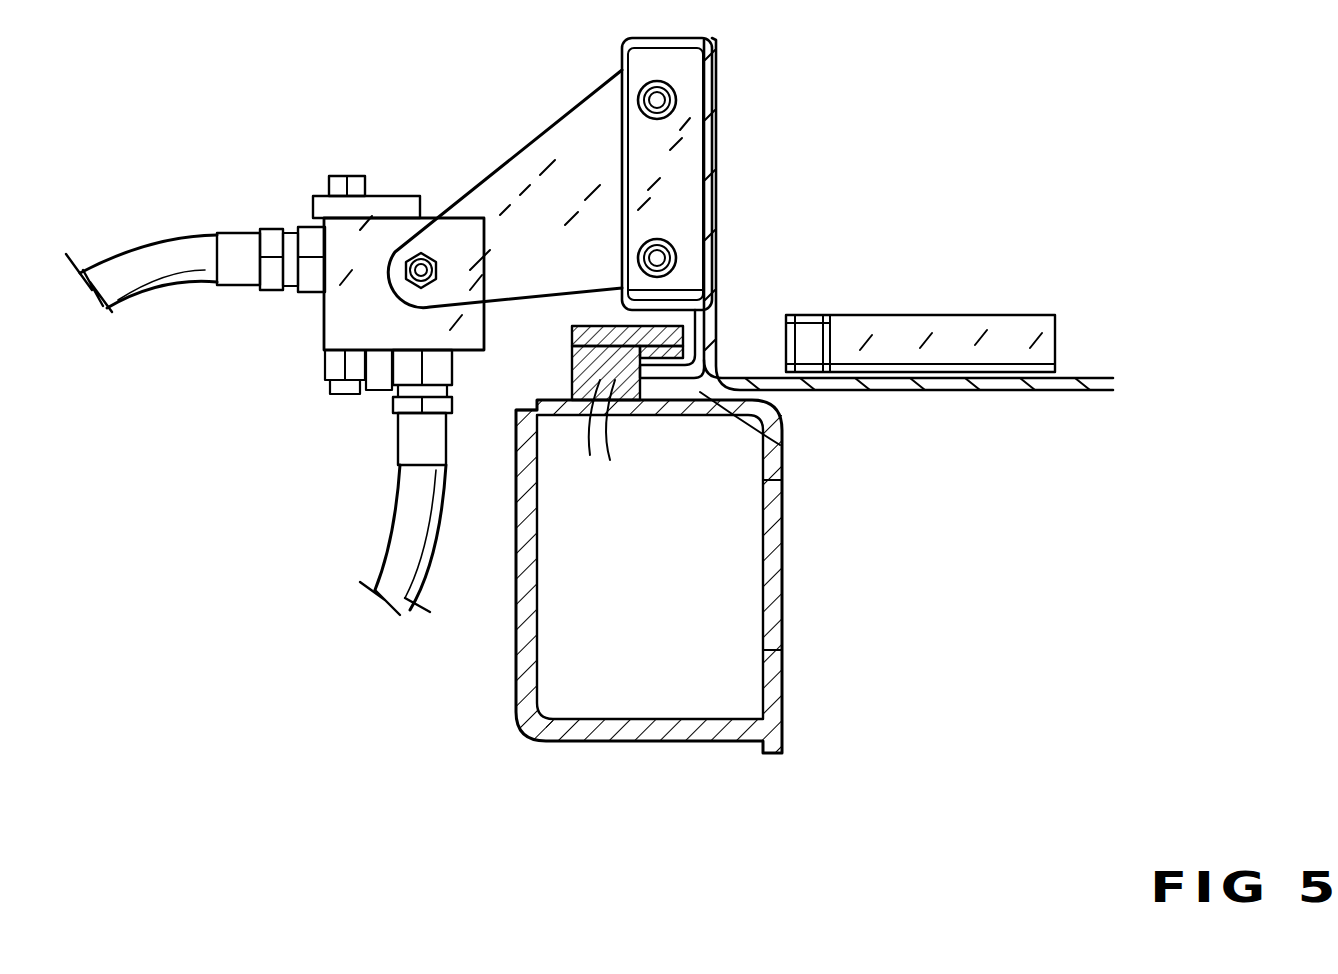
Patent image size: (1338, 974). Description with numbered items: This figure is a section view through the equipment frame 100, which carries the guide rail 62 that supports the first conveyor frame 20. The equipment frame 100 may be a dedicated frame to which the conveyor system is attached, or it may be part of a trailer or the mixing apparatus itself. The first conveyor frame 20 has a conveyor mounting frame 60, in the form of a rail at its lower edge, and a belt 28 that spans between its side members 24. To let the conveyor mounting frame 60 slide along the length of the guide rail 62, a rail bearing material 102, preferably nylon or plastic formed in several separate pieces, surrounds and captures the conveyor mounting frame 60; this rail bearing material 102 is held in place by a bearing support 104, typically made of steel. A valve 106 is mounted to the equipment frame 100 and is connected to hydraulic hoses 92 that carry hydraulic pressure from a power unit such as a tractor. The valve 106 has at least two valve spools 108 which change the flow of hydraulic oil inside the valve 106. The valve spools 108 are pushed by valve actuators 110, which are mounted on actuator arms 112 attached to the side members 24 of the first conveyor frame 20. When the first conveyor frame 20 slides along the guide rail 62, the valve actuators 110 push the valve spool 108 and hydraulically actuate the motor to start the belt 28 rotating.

The first conveyor frame 20 is at (716, 105).
The side member 24 is at (716, 205).
The belt 28 is at (945, 330).
The conveyor mounting frame 60 is at (730, 400).
The guide rail 62 is at (775, 540).
The hydraulic hoses 92 is at (410, 497).
The equipment frame 100 is at (525, 668).
The rail bearing material 102 is at (595, 395).
The bearing support 104 is at (700, 335).
The valve 106 is at (335, 325).
The valve spool 108 is at (402, 250).
The valve actuator 110 is at (400, 268).
The actuator arm 112 is at (578, 135).